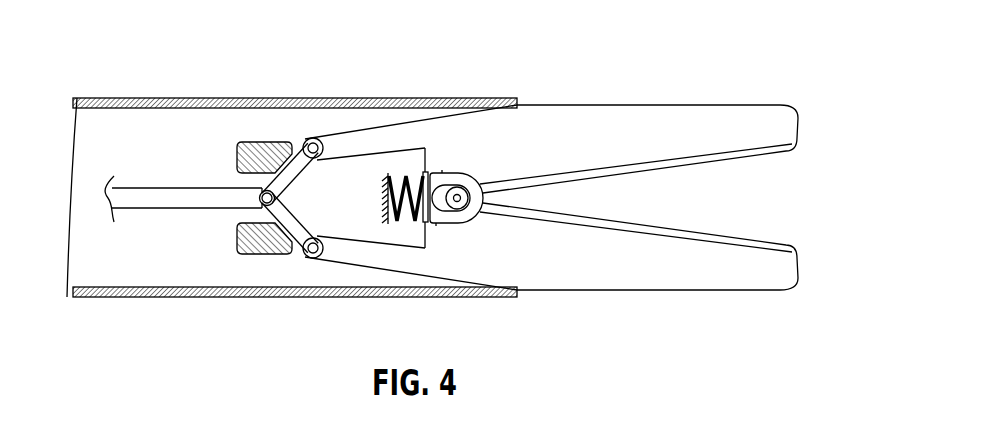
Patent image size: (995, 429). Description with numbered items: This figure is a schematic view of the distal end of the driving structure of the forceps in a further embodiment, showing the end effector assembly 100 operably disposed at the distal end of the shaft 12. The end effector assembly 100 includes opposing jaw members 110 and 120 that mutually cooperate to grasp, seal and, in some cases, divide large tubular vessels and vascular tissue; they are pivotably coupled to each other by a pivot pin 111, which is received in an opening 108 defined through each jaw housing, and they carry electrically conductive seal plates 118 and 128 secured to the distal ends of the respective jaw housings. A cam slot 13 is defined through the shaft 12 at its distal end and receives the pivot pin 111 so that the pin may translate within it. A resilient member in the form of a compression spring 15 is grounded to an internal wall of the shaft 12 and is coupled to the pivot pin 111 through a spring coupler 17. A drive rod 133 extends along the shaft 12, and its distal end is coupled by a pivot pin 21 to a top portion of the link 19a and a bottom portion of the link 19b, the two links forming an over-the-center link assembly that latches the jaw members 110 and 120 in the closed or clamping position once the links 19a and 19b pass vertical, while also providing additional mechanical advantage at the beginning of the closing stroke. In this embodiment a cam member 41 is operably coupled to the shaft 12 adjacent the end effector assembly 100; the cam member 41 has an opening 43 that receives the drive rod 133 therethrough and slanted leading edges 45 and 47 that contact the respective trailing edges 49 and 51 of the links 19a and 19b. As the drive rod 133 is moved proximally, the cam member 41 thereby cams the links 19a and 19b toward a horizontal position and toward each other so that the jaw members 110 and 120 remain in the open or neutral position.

The end effector assembly 100 is at (626, 74).
The shaft 12 is at (140, 97).
The drive rod 133 is at (152, 187).
The trailing edge 51 is at (262, 188).
The trailing edge 49 is at (262, 208).
The pivot pin 21 is at (270, 191).
The cam member 41 is at (228, 153).
The opening 43 is at (228, 242).
The slanted leading edge 47 is at (297, 178).
The slanted leading edge 45 is at (318, 260).
The link 19a is at (318, 178).
The link 19b is at (335, 238).
The compression spring 15 is at (419, 236).
The opening 108 is at (467, 180).
The pivot pin 111 is at (460, 216).
The spring coupler 17 is at (442, 170).
The cam slot 13 is at (436, 226).
The jaw member 120 is at (647, 129).
The seal plate 128 is at (737, 160).
The jaw member 110 is at (650, 271).
The seal plate 118 is at (737, 235).